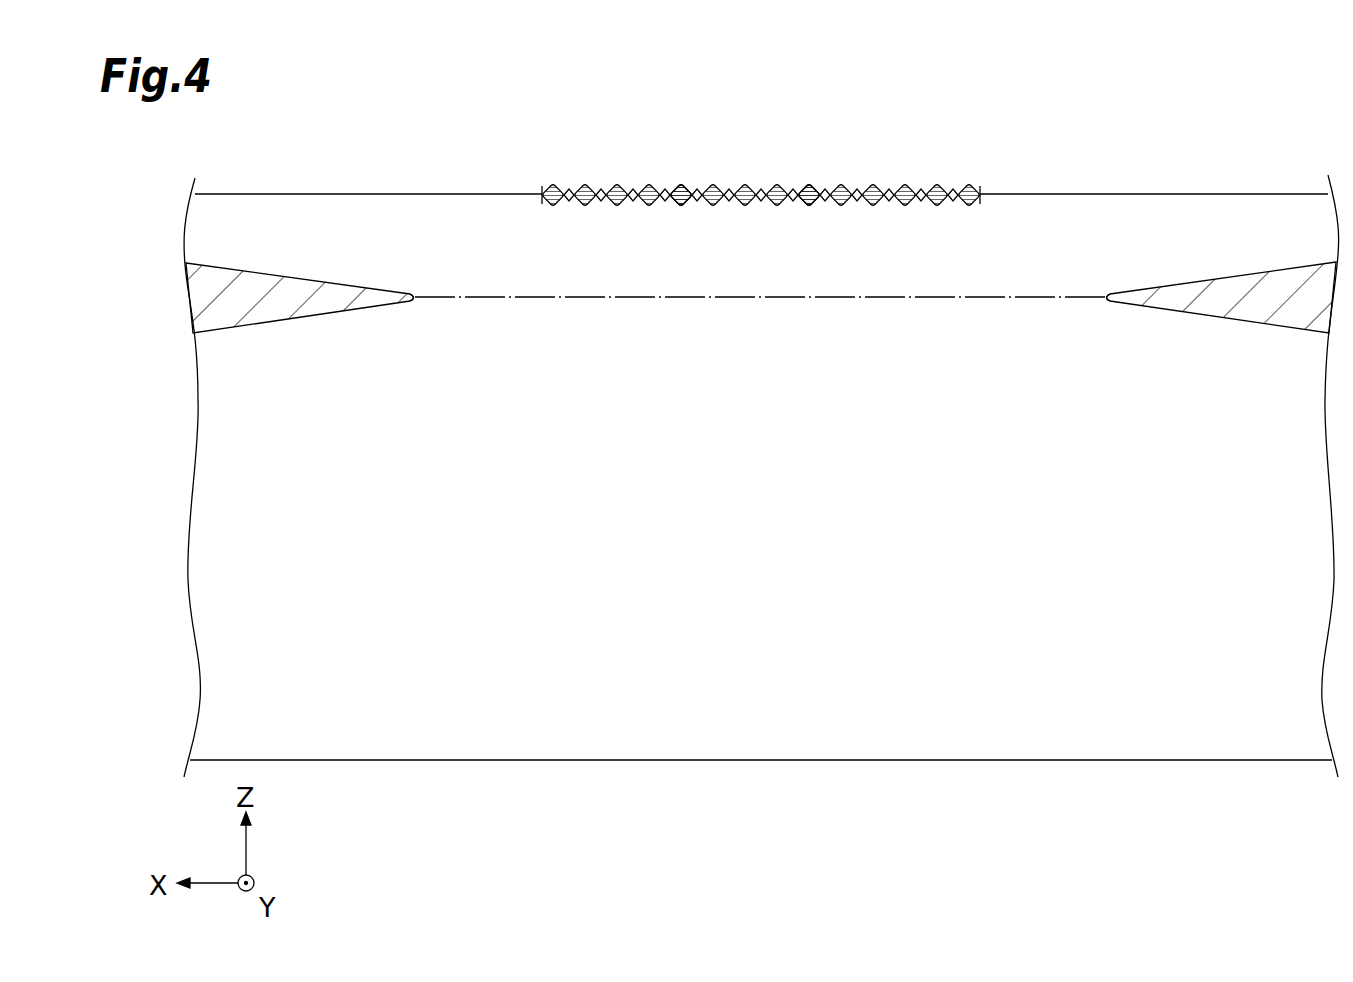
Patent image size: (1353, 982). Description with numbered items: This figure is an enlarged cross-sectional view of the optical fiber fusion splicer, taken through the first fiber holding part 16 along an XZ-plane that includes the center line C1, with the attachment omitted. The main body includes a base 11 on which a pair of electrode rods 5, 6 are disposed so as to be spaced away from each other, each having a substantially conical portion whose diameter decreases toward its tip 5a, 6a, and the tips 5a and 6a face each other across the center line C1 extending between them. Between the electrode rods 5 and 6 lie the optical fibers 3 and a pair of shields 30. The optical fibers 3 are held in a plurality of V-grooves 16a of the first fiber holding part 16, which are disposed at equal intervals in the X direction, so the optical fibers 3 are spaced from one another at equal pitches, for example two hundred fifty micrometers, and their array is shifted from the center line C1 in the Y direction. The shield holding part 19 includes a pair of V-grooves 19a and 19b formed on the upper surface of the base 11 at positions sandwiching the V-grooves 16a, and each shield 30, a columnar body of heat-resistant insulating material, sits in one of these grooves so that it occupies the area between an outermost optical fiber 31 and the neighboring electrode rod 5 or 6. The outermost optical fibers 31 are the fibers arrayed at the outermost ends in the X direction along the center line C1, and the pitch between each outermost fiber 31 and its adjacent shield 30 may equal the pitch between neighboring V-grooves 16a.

The optical fibers 3 is at (712, 185).
The electrode rod 5 is at (287, 312).
The tip 5a is at (414, 303).
The electrode rod 6 is at (1237, 316).
The tip 6a is at (1108, 303).
The base 11 is at (1253, 193).
The first fiber holding part 16 is at (748, 157).
The V-grooves 16a is at (680, 185).
The shield holding part 19 is at (763, 179).
The V-groove 19a is at (545, 204).
The V-groove 19b is at (977, 204).
The shields 30 is at (552, 184).
The outermost optical fibers 31 is at (585, 185).
The center line C1 is at (993, 300).